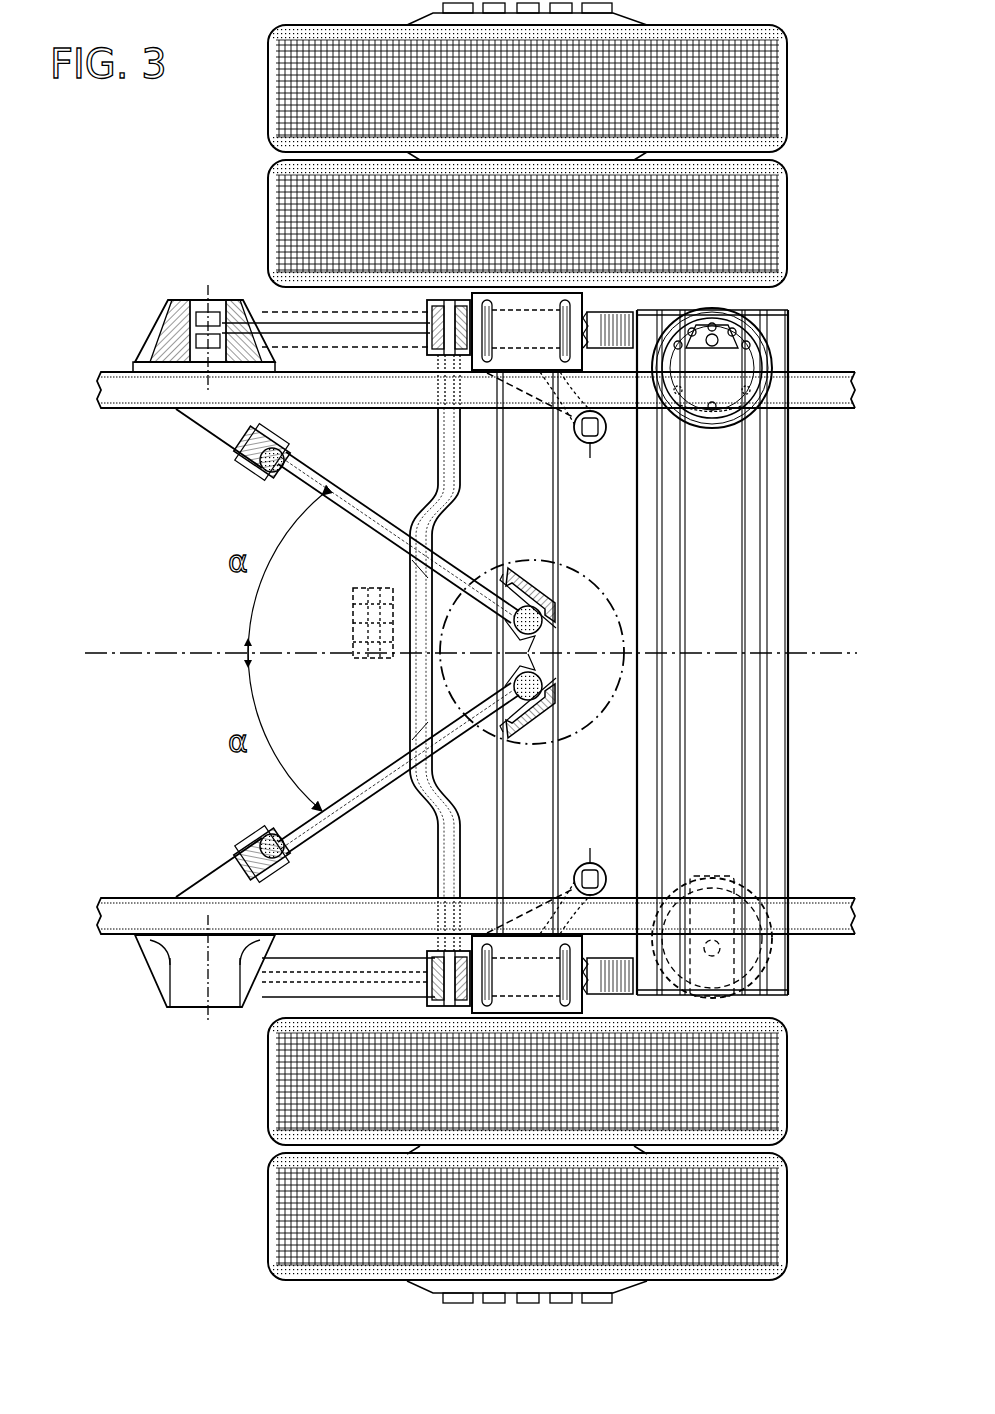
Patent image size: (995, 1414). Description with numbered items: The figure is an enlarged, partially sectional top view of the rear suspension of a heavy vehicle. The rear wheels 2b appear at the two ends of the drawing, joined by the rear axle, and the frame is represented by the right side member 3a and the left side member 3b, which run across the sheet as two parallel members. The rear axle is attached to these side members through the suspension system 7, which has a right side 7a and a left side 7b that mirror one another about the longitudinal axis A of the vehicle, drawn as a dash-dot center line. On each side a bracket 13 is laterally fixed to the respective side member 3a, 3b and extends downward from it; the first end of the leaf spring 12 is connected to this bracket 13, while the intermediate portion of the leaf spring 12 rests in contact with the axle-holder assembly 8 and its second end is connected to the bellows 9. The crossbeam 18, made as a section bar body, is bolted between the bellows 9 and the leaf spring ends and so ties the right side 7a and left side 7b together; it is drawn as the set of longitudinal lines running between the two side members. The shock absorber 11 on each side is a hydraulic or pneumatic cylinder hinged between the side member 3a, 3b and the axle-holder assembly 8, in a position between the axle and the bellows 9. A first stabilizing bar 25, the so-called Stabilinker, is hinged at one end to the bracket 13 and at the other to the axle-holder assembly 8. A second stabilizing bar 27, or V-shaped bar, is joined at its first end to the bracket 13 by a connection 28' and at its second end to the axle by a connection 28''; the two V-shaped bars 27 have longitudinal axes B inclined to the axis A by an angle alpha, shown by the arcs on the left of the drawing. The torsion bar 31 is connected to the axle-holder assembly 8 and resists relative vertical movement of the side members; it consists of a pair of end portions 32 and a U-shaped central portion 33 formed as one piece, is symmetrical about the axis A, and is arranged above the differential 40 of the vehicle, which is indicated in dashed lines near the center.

The rear wheels 2b is at (787, 110).
The right side member 3a is at (812, 906).
The left side member 3b is at (815, 394).
The suspension system 7 is at (108, 691).
The right side of the suspension system 7a is at (80, 886).
The left side of the suspension system 7b is at (154, 438).
The axle-holder assembly 8 is at (582, 371).
The bellows 9 is at (712, 430).
The shock absorber 11 is at (588, 440).
The leaf spring 12 is at (300, 342).
The bracket 13 is at (158, 330).
The crossbeam 18 is at (670, 640).
The first stabilizing bar 25 is at (300, 305).
The second stabilizing bar 27 is at (362, 522).
The connection 28' is at (231, 653).
The connection 28'' is at (557, 650).
The torsion bar 31 is at (403, 698).
The end portions 32 is at (437, 464).
The U-shaped central portion 33 is at (430, 742).
The differential 40 is at (352, 636).
The longitudinal axis A is at (802, 652).
The longitudinal axes B is at (548, 654).